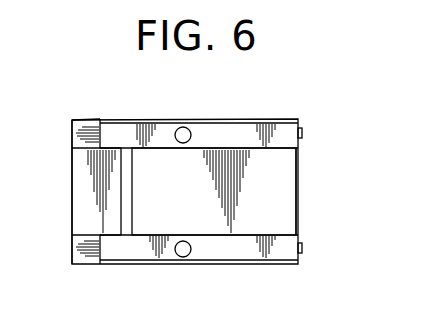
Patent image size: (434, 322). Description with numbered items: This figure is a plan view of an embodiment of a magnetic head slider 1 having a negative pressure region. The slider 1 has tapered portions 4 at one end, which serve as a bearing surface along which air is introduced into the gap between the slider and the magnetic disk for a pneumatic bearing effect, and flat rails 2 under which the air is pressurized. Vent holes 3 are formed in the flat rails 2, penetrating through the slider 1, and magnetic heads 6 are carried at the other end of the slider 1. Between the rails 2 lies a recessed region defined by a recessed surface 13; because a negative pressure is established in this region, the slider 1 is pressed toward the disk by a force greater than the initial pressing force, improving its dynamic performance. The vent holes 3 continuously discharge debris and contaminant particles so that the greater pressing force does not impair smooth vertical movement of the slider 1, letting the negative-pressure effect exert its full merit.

The magnetic head slider 1 is at (300, 118).
The flat rails 2 is at (121, 130).
The vent holes 3 is at (185, 128).
The tapered portions 4 is at (72, 133).
The magnetic head 6 is at (303, 133).
The recessed surface 13 is at (290, 190).